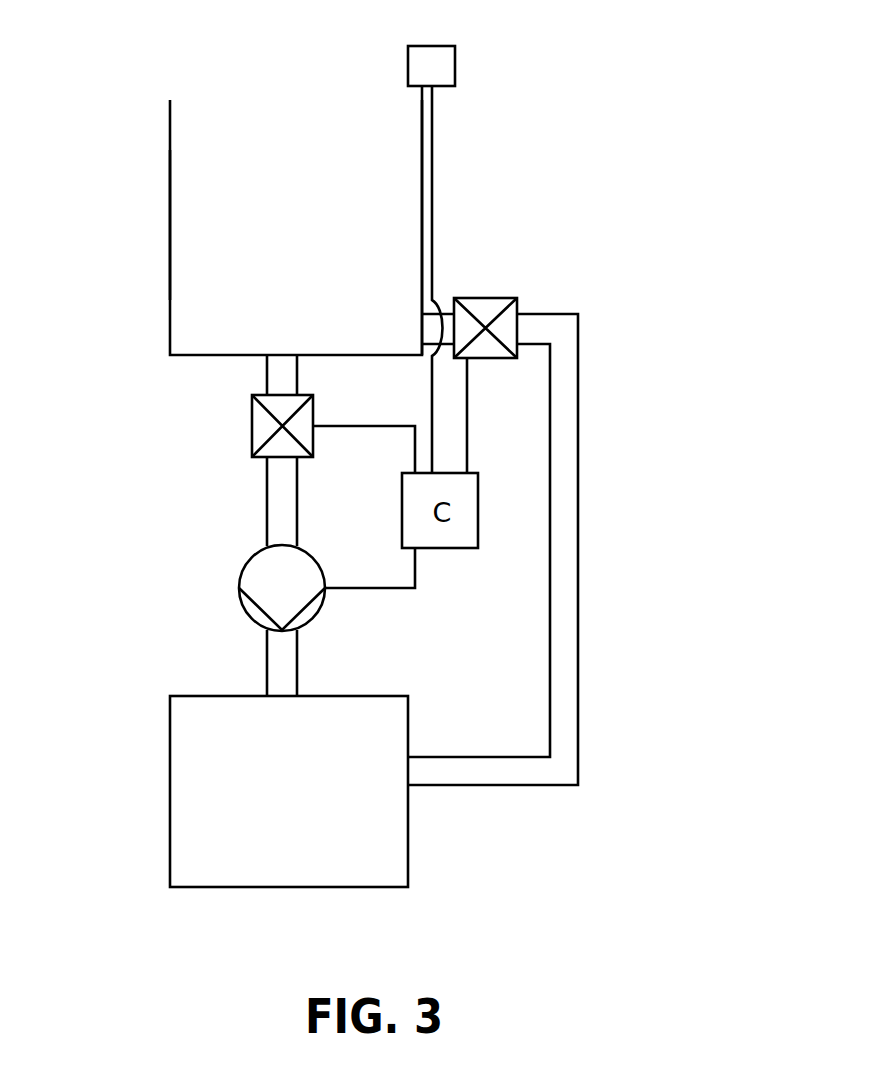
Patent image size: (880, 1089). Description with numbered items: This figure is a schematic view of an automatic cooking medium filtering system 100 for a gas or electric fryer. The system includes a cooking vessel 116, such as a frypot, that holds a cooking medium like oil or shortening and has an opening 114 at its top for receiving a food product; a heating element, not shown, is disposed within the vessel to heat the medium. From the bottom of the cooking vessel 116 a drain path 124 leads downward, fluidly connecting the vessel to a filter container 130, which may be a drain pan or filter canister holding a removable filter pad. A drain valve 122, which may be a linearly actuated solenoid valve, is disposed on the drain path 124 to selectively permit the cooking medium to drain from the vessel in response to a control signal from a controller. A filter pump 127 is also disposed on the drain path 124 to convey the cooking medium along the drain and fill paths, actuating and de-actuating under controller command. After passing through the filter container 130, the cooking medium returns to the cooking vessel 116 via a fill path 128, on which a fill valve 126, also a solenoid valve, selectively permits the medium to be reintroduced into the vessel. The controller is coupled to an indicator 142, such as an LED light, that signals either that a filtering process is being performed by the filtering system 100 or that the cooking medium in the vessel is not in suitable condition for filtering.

The filtering system 100 is at (618, 105).
The opening 114 is at (190, 80).
The cooking vessel 116 is at (208, 242).
The drain valve 122 is at (252, 425).
The drain path 124 is at (267, 491).
The fill valve 126 is at (487, 298).
The filter pump 127 is at (247, 566).
The fill path 128 is at (568, 528).
The filter container 130 is at (188, 802).
The indicator 142 is at (455, 46).